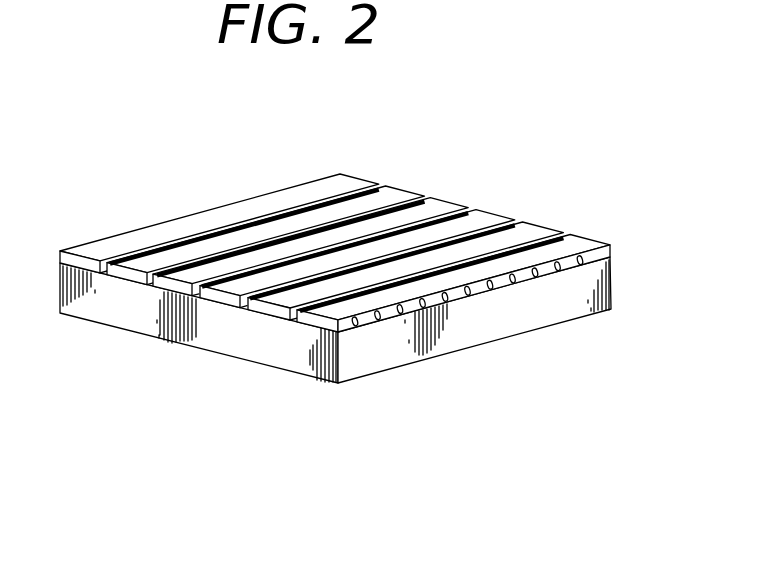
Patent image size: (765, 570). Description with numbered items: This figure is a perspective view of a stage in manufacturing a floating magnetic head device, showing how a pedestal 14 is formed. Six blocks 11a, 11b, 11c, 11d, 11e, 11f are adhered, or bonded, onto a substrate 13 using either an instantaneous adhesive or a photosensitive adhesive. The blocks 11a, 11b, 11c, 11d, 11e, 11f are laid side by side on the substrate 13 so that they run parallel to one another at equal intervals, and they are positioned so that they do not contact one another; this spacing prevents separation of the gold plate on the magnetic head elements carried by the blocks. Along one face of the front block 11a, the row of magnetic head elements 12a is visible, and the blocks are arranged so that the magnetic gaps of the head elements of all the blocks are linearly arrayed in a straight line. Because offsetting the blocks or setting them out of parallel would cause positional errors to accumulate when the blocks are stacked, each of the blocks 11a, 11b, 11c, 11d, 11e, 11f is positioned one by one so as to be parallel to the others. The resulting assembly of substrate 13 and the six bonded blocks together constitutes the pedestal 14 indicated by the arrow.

The block 11a is at (580, 245).
The block 11b is at (533, 230).
The block 11c is at (487, 220).
The block 11d is at (447, 208).
The block 11e is at (398, 195).
The block 11f is at (343, 185).
The magnetic head elements 12a is at (360, 324).
The substrate 13 is at (520, 323).
The pedestal 14 is at (387, 404).